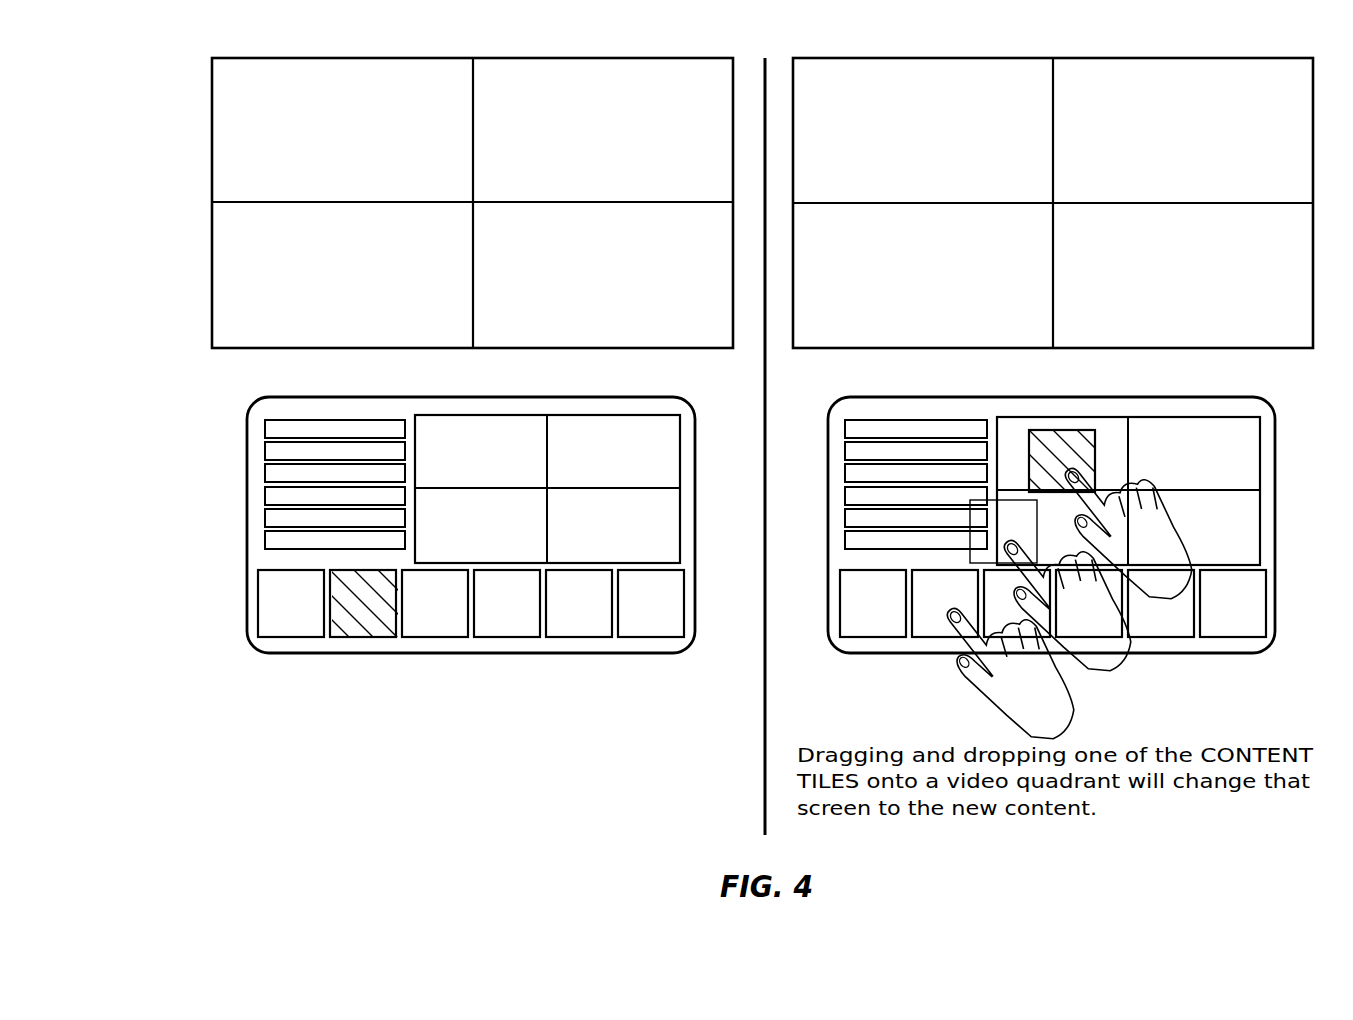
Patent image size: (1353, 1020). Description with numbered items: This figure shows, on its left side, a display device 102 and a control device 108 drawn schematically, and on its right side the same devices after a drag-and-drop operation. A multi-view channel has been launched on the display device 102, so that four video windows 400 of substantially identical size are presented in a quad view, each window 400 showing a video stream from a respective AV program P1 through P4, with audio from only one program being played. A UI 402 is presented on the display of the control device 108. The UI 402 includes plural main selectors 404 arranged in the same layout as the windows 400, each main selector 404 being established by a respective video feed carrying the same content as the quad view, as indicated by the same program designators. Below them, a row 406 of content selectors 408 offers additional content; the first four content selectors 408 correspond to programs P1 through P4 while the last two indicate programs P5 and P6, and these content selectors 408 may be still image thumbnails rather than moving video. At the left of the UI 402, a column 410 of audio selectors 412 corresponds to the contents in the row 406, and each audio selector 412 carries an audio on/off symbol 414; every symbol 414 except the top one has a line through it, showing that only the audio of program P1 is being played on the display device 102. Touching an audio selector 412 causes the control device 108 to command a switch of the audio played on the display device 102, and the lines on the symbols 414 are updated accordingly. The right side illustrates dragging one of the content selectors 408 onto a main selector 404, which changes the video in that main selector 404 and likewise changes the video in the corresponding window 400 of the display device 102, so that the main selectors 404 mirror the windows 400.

The display device 102 is at (634, 58).
The control device 108 is at (580, 397).
The video window 400 is at (366, 158).
The UI 402 is at (240, 490).
The main selector 404 is at (461, 479).
The row 406 is at (254, 603).
The content selector 408 is at (292, 637).
The column 410 is at (412, 395).
The audio selector 412 is at (262, 431).
The audio on/off symbol 414 is at (307, 420).